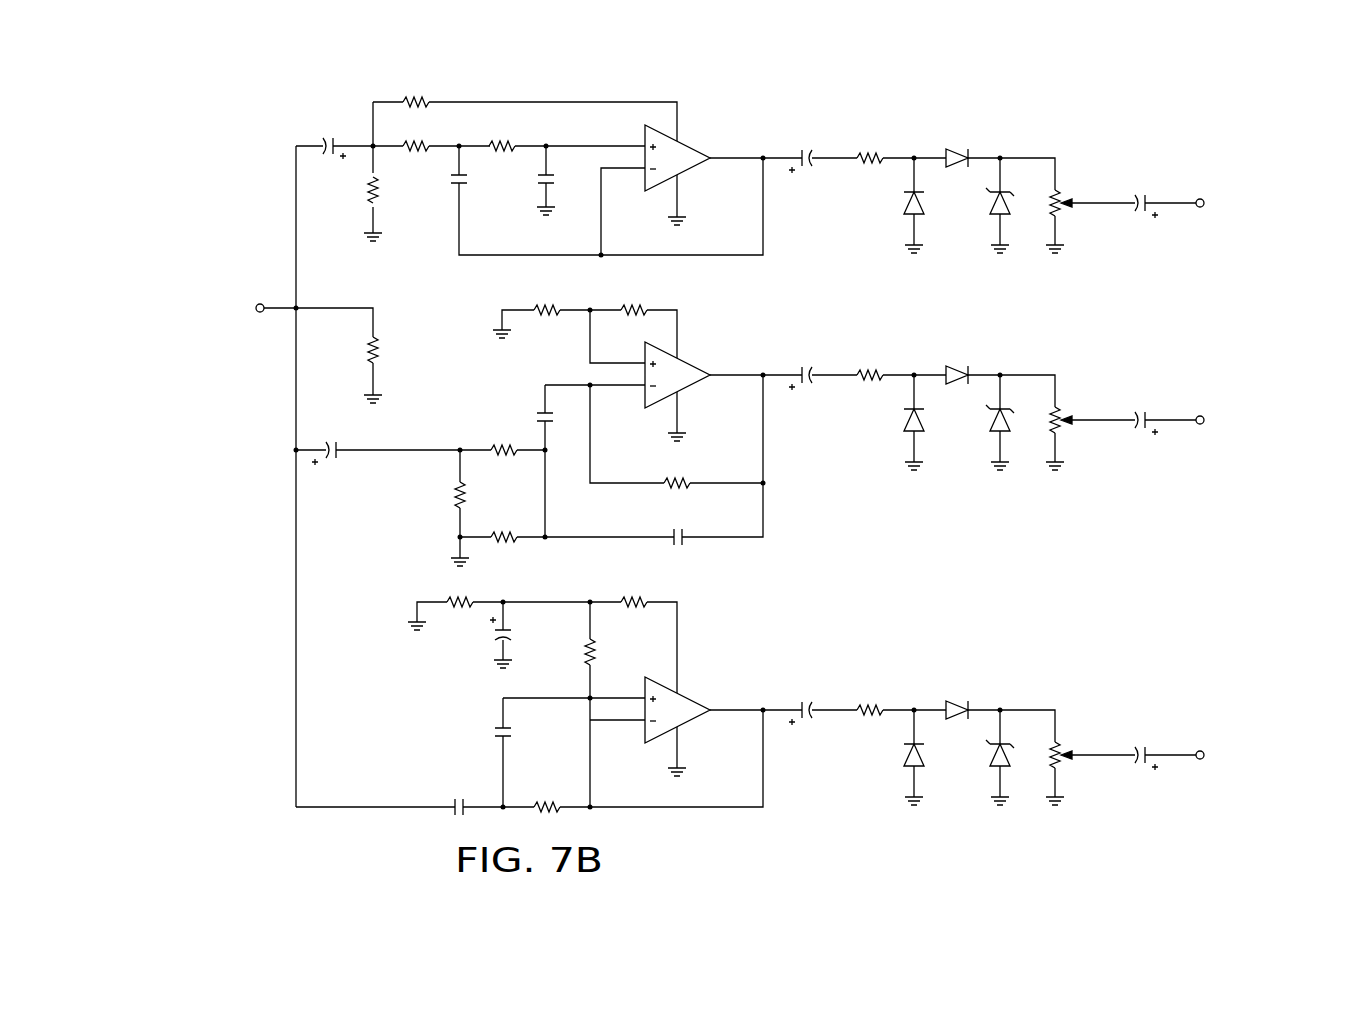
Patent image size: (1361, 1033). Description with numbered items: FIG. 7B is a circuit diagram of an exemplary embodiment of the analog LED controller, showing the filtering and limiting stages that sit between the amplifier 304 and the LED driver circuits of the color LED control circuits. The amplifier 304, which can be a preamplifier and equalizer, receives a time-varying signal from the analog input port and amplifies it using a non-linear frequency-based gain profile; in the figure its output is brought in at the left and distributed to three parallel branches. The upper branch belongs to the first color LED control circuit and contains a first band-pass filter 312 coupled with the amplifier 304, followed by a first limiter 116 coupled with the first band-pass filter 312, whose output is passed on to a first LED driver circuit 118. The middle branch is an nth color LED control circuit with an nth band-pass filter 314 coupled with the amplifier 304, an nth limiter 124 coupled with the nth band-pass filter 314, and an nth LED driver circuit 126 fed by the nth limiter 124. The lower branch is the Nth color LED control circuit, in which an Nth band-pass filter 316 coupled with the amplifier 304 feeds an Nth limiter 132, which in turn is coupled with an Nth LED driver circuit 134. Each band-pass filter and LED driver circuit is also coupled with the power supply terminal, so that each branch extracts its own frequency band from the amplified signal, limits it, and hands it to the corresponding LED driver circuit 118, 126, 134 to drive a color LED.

The amplifier 304 is at (186, 295).
The first band-pass filter 312 is at (705, 116).
The nth band-pass filter 314 is at (705, 334).
The Nth band-pass filter 316 is at (705, 671).
The first limiter 116 is at (1046, 130).
The first LED driver circuit 118 is at (1275, 175).
The nth limiter 124 is at (1046, 347).
The nth LED driver circuit 126 is at (1282, 387).
The Nth limiter 132 is at (1046, 683).
The Nth LED driver circuit 134 is at (1303, 725).